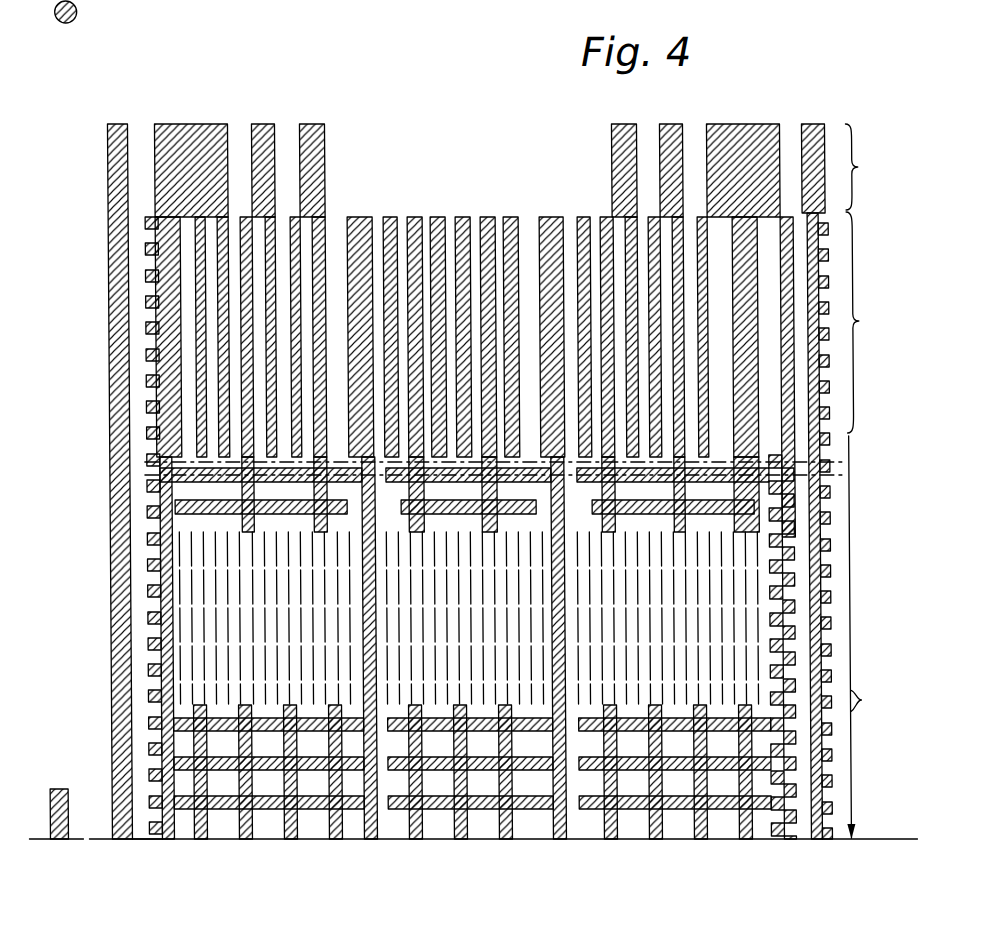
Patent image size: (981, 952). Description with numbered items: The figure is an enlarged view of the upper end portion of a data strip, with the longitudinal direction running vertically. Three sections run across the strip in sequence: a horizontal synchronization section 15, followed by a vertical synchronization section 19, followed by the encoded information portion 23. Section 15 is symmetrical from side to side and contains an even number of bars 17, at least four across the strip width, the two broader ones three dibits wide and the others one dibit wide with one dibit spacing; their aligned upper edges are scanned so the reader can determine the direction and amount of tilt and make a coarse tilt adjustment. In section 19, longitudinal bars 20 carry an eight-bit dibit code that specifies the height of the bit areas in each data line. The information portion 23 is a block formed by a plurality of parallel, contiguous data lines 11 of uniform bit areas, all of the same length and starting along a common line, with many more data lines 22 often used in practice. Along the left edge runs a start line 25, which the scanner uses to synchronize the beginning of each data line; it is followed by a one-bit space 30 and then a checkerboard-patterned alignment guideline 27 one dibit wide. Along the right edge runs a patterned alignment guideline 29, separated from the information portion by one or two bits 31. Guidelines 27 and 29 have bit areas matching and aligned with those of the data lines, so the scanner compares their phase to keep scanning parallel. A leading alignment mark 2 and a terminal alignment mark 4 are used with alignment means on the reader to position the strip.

The leading alignment mark 2 is at (84, 24).
The terminal alignment mark 4 is at (44, 814).
The data lines 11 is at (803, 478).
The horizontal synchronization section 15 is at (866, 167).
The bars 17 is at (118, 124).
The vertical synchronization section 19 is at (867, 322).
The bars 20 is at (358, 217).
The data lines 22 is at (150, 219).
The encoded information portion 23 is at (873, 637).
The start line 25 is at (108, 720).
The checkerboard-patterned alignment guideline 27 is at (160, 845).
The patterned alignment guideline 29 is at (830, 832).
The space 30 is at (138, 845).
The bits 31 is at (792, 843).